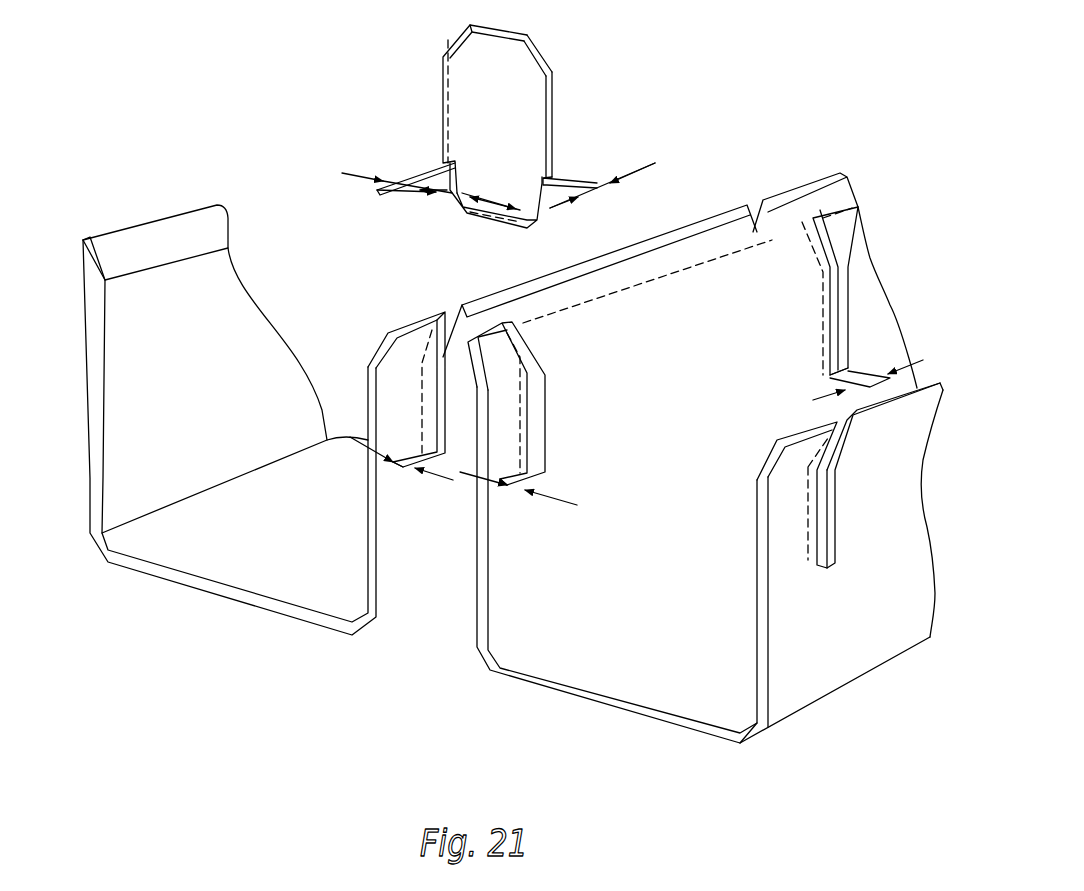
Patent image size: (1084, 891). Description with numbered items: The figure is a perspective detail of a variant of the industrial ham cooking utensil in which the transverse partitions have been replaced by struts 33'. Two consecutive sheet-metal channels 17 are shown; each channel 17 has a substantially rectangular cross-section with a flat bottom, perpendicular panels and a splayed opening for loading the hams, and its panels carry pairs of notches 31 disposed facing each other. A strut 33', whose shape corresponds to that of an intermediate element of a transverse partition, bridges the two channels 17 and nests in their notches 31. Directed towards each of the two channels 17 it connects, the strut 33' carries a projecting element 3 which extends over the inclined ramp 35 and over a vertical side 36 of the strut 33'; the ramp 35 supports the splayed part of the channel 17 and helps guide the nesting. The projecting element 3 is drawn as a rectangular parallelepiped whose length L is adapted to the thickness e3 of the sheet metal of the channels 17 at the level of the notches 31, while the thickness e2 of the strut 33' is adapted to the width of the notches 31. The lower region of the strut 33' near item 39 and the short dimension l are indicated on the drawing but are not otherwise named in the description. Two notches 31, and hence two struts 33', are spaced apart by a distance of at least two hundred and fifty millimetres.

The projecting element 3 is at (440, 97).
The channel 17 is at (622, 284).
The notch 31 is at (537, 427).
The strut 33' is at (566, 94).
The ramp 35 is at (538, 48).
The vertical side 36 is at (553, 117).
The bottom lip 39 is at (460, 207).
The thickness of the strut e2 is at (615, 185).
The thickness of the sheet metal of the channels e3 is at (463, 481).
The length of the projecting element L is at (399, 173).
The length l is at (865, 380).